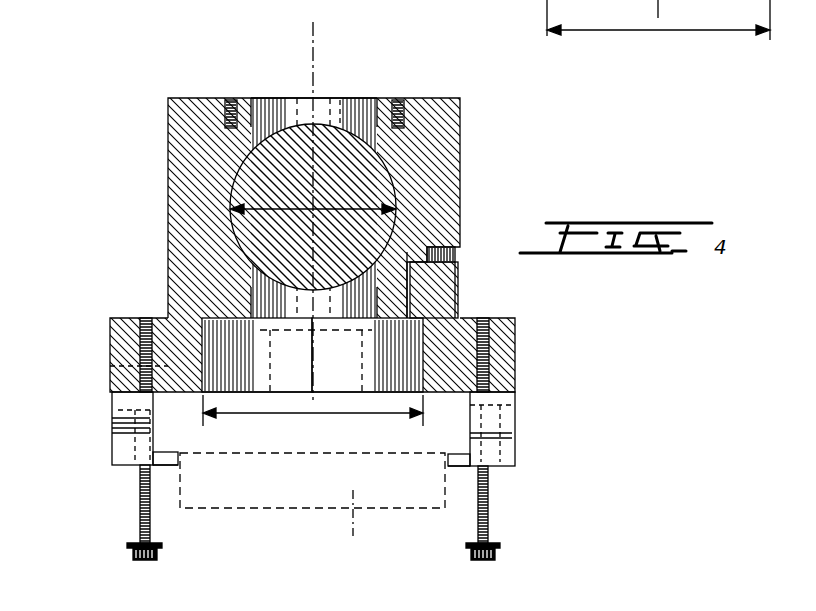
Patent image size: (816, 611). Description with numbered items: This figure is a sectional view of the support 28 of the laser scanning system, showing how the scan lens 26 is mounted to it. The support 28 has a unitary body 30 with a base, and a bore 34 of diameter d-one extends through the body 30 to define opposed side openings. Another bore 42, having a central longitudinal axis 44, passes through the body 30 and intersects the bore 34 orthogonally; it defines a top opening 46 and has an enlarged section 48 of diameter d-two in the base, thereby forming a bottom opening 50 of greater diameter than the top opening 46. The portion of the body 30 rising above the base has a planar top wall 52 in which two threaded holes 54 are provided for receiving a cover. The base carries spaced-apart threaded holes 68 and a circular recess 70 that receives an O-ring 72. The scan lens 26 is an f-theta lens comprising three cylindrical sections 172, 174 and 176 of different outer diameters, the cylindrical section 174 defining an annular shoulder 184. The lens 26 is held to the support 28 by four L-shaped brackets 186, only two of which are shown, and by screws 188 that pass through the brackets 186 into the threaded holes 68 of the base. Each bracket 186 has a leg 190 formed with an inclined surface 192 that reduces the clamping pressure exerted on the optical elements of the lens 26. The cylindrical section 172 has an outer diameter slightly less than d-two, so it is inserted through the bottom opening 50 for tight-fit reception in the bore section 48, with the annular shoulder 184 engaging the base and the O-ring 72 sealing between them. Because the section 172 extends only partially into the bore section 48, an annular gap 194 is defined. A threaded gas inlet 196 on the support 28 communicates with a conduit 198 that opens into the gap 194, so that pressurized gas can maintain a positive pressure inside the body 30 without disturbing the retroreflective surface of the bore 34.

The scan lens 26 is at (278, 512).
The support 28 is at (190, 80).
The unitary body 30 is at (462, 160).
The bore 34 is at (255, 230).
The bore 42 is at (288, 105).
The central longitudinal axis 44 is at (322, 74).
The top opening 46 is at (342, 108).
The enlarged section 48 is at (355, 357).
The bottom opening 50 is at (275, 382).
The planar top wall 52 is at (446, 98).
The threaded holes 54 is at (230, 98).
The threaded holes 68 is at (146, 322).
The circular recess 70 is at (494, 0).
The O-ring 72 is at (115, 410).
The cylindrical section 172 is at (135, 354).
The cylindrical section 174 is at (112, 444).
The cylindrical section 176 is at (345, 521).
The annular shoulder 184 is at (470, 374).
The L-shaped brackets 186 is at (120, 466).
The screws 188 is at (140, 516).
The leg 190 is at (165, 470).
The inclined surface 192 is at (160, 452).
The annular gap 194 is at (458, 304).
The threaded gas inlet 196 is at (452, 252).
The conduit 198 is at (410, 294).